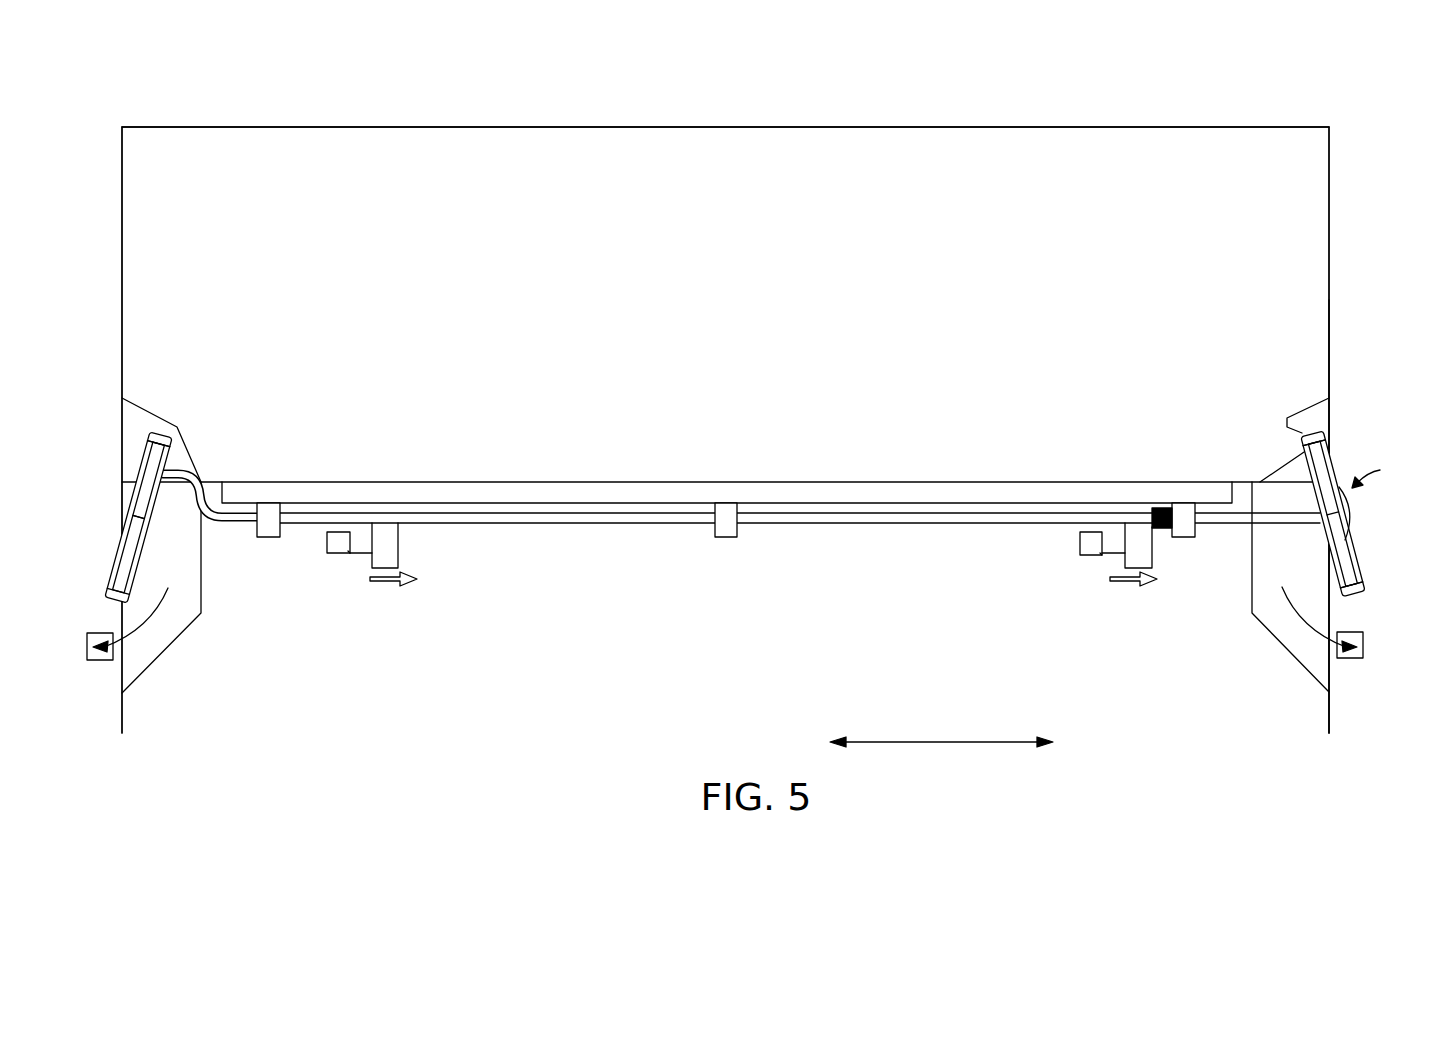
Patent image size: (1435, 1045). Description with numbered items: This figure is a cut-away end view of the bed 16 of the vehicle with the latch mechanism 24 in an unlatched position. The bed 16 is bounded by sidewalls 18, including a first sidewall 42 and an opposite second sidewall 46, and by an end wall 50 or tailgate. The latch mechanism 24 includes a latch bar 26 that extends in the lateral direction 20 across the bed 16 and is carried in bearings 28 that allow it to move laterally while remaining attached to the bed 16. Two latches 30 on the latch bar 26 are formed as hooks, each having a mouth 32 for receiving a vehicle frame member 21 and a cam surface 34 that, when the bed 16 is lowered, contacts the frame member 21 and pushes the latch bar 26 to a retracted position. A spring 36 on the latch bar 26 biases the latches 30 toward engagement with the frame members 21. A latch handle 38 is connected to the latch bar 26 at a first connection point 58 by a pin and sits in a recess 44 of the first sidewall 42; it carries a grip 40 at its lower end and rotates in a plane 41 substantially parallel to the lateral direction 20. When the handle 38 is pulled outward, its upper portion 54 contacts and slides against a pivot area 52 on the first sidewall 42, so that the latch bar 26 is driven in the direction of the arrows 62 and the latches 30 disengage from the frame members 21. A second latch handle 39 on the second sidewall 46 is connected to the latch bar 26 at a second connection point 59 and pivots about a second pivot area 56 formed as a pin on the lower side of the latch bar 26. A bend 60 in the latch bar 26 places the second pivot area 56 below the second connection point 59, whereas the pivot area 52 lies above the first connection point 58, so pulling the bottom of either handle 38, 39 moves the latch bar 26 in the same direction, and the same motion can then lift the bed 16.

The bed 16 is at (769, 112).
The sidewalls 18 is at (1331, 283).
The lateral direction 20 is at (942, 740).
The vehicle frame members 21 is at (327, 546).
The latch mechanism 24 is at (1383, 472).
The latch bar 26 is at (622, 523).
The bearings 28 is at (268, 538).
The latch 30 is at (400, 536).
The mouth 32 is at (352, 551).
The cam surface 34 is at (355, 552).
The spring 36 is at (1153, 533).
The latch handle 38 is at (1353, 542).
The second latch handle 39 is at (127, 488).
The grip 40 is at (1365, 587).
The plane 41 is at (96, 660).
The first sidewall 42 is at (1331, 335).
The recess 44 is at (145, 660).
The second sidewall 46 is at (121, 318).
The end wall 50 is at (579, 126).
The pivot area 52 is at (1322, 436).
The upper portion 54 is at (1323, 425).
The second pivot area 56 is at (137, 532).
The first connection point 58 is at (1353, 508).
The second connection point 59 is at (147, 460).
The bend 60 is at (183, 507).
The arrows 62 is at (398, 587).